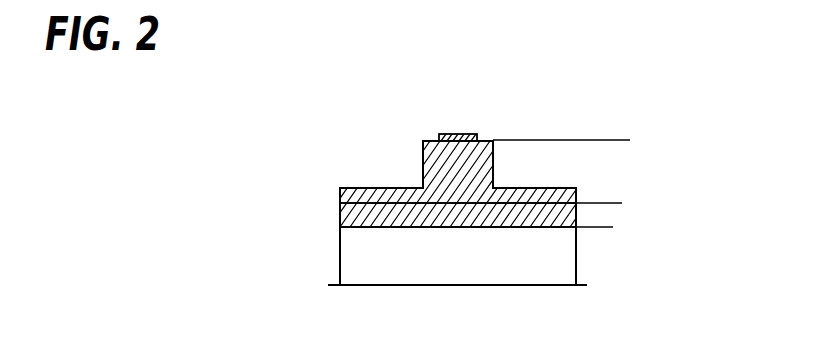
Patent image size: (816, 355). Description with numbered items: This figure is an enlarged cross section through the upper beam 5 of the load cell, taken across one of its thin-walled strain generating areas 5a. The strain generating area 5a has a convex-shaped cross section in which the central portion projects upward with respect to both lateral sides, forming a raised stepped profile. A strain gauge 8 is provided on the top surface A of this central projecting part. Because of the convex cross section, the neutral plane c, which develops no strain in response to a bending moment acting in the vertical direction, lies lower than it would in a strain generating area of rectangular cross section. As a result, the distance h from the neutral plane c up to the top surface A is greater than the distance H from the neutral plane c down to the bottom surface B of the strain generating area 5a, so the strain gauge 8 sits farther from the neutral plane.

The upper beam 5 is at (355, 257).
The strain generating area 5a is at (447, 179).
The strain gauge 8 is at (477, 134).
The top surface A is at (437, 140).
The bottom surface B is at (445, 228).
The neutral plane c is at (340, 203).
The distance from neutral plane to top surface h is at (607, 146).
The distance from neutral plane to bottom surface H is at (607, 258).